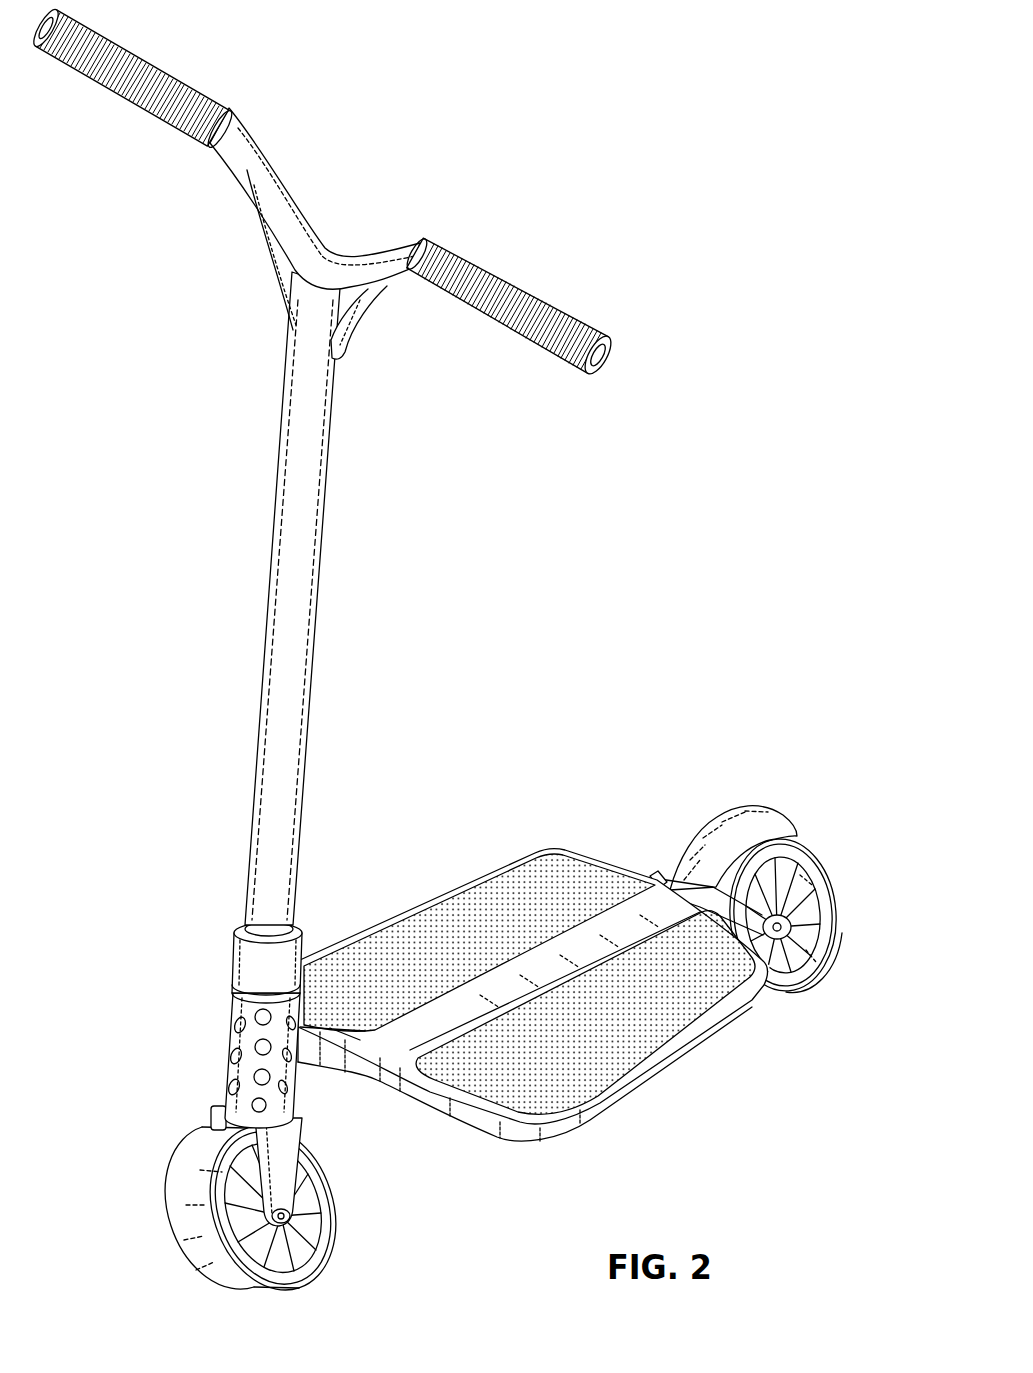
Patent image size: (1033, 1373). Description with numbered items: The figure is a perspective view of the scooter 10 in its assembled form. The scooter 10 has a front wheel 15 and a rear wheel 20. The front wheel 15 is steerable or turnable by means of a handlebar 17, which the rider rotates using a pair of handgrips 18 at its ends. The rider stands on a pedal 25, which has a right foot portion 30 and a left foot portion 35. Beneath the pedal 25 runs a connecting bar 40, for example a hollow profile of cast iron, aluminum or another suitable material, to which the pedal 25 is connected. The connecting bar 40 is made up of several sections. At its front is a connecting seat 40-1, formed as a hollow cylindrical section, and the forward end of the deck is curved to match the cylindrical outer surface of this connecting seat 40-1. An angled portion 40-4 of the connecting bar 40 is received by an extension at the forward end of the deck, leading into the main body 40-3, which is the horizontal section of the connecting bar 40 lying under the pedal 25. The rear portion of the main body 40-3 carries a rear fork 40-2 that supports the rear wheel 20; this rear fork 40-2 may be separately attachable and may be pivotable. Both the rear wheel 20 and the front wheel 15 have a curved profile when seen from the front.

The scooter 10 is at (673, 652).
The front wheel 15 is at (322, 1215).
The handlebar 17 is at (282, 568).
The handgrips 18 is at (130, 78).
The rear wheel 20 is at (826, 930).
The pedal 25 is at (544, 836).
The right foot portion 30 is at (460, 912).
The left foot portion 35 is at (637, 1055).
The connecting bar 40 is at (607, 908).
The connecting seat 40-1 is at (245, 1040).
The rear fork 40-2 is at (750, 920).
The main body 40-3 is at (480, 1020).
The angled portion 40-4 is at (345, 1025).